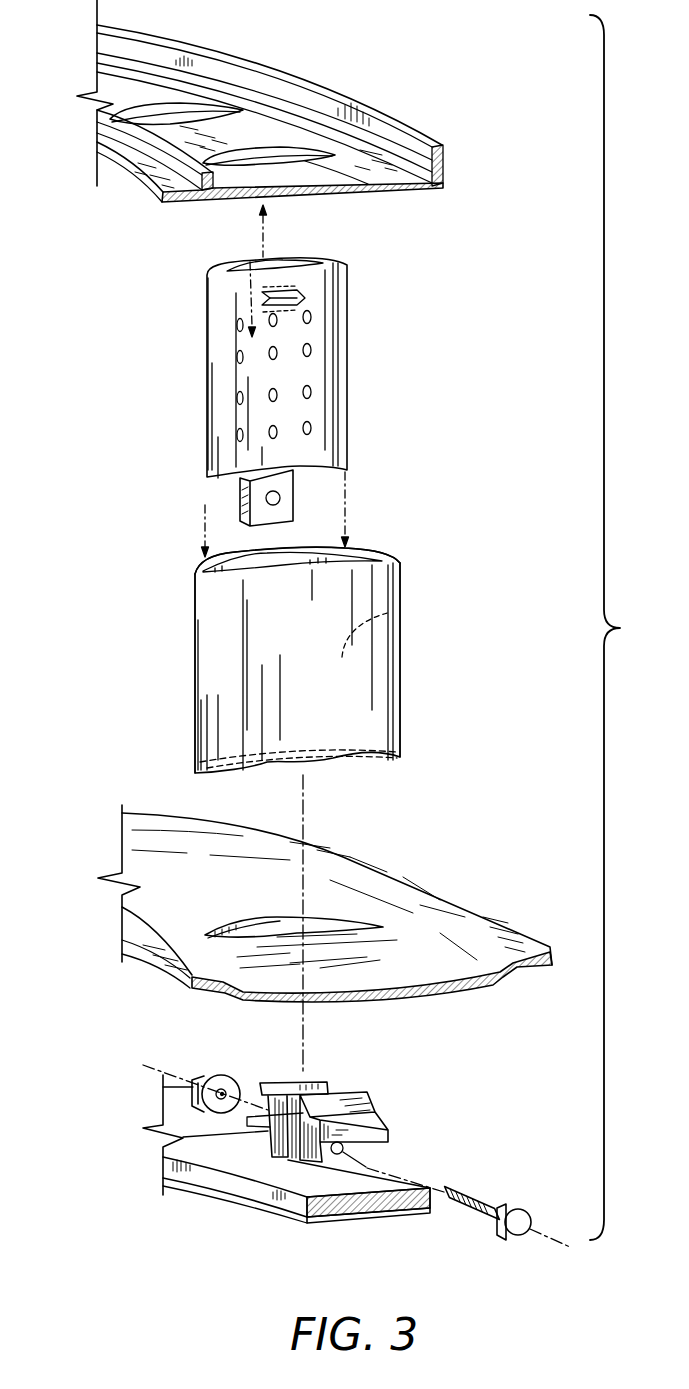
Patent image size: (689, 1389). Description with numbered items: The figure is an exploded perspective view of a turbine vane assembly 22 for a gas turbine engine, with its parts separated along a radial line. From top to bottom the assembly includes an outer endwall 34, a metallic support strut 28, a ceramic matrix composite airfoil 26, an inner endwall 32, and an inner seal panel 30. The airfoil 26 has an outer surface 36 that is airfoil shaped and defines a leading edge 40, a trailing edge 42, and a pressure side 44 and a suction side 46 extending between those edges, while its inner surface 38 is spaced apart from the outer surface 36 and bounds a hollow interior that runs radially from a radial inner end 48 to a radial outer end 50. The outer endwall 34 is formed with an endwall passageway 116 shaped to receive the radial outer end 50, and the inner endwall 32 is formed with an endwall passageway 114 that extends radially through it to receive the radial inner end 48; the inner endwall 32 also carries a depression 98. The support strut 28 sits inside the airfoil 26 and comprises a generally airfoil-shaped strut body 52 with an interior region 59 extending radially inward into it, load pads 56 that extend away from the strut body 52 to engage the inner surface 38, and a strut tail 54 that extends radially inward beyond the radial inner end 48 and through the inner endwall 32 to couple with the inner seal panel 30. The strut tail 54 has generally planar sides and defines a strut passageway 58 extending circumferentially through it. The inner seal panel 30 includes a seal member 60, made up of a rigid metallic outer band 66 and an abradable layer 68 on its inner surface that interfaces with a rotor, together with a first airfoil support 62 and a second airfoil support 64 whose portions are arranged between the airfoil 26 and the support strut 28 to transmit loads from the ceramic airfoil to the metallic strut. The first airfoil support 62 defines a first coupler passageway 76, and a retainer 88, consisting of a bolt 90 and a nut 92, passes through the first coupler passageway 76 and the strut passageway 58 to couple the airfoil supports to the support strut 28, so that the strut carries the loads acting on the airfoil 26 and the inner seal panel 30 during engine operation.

The turbine vane assembly 22 is at (627, 627).
The airfoil 26 is at (195, 618).
The support strut 28 is at (203, 400).
The inner seal panel 30 is at (193, 1200).
The inner endwall 32 is at (157, 912).
The outer endwall 34 is at (118, 148).
The outer surface 36 is at (275, 685).
The inner surface 38 is at (207, 556).
The leading edge 40 is at (195, 683).
The trailing edge 42 is at (400, 650).
The pressure side 44 is at (338, 687).
The suction side 46 is at (387, 614).
The radial inner end 48 is at (407, 762).
The radial outer end 50 is at (284, 561).
The strut body 52 is at (302, 410).
The strut tail 54 is at (247, 508).
The load pads 56 is at (302, 298).
The strut passageway 58 is at (281, 500).
The interior region 59 is at (250, 300).
The seal member 60 is at (242, 1203).
The first airfoil support 62 is at (375, 1112).
The second airfoil support 64 is at (283, 1080).
The outer band 66 is at (410, 1210).
The abradable layer 68 is at (337, 1225).
The first coupler passageway 76 is at (350, 1156).
The retainer 88 is at (493, 1198).
The bolt 90 is at (514, 1238).
The nut 92 is at (212, 1076).
The depression 98 is at (425, 963).
The endwall passageway 114 is at (267, 923).
The endwall passageway 116 is at (290, 157).